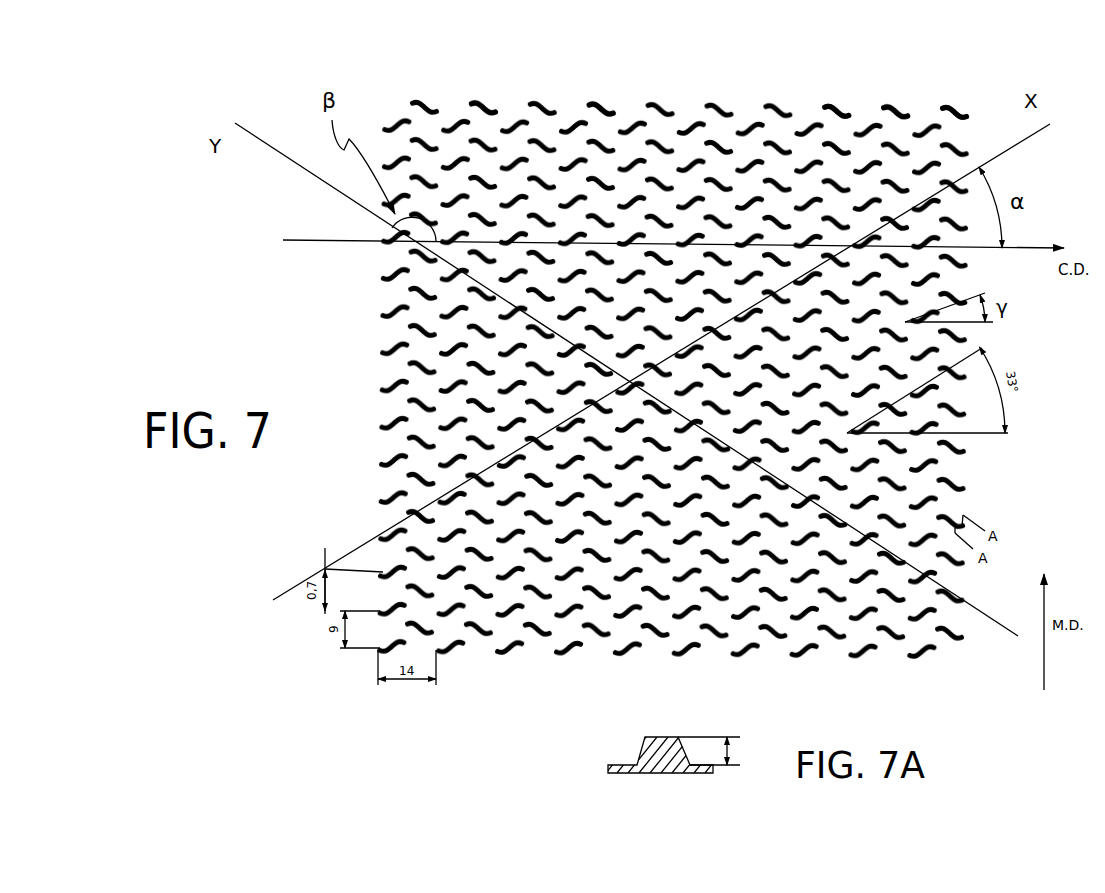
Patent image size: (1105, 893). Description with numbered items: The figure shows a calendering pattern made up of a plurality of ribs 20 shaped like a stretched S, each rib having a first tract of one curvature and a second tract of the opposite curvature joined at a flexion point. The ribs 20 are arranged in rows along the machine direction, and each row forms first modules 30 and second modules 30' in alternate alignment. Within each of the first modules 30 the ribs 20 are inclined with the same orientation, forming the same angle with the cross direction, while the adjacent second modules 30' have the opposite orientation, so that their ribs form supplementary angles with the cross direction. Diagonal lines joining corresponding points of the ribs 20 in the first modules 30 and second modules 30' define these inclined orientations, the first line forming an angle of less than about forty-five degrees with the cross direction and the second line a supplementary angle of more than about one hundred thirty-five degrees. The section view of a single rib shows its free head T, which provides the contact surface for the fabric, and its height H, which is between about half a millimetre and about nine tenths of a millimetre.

In FIG. 7, the ribs 20 is at (947, 108).
In FIG. 7, the first modules 30 is at (543, 66).
In FIG. 7, the second modules 30' is at (583, 65).
In FIG. 7A, the free head T is at (666, 735).
In FIG. 7A, the height H is at (711, 751).